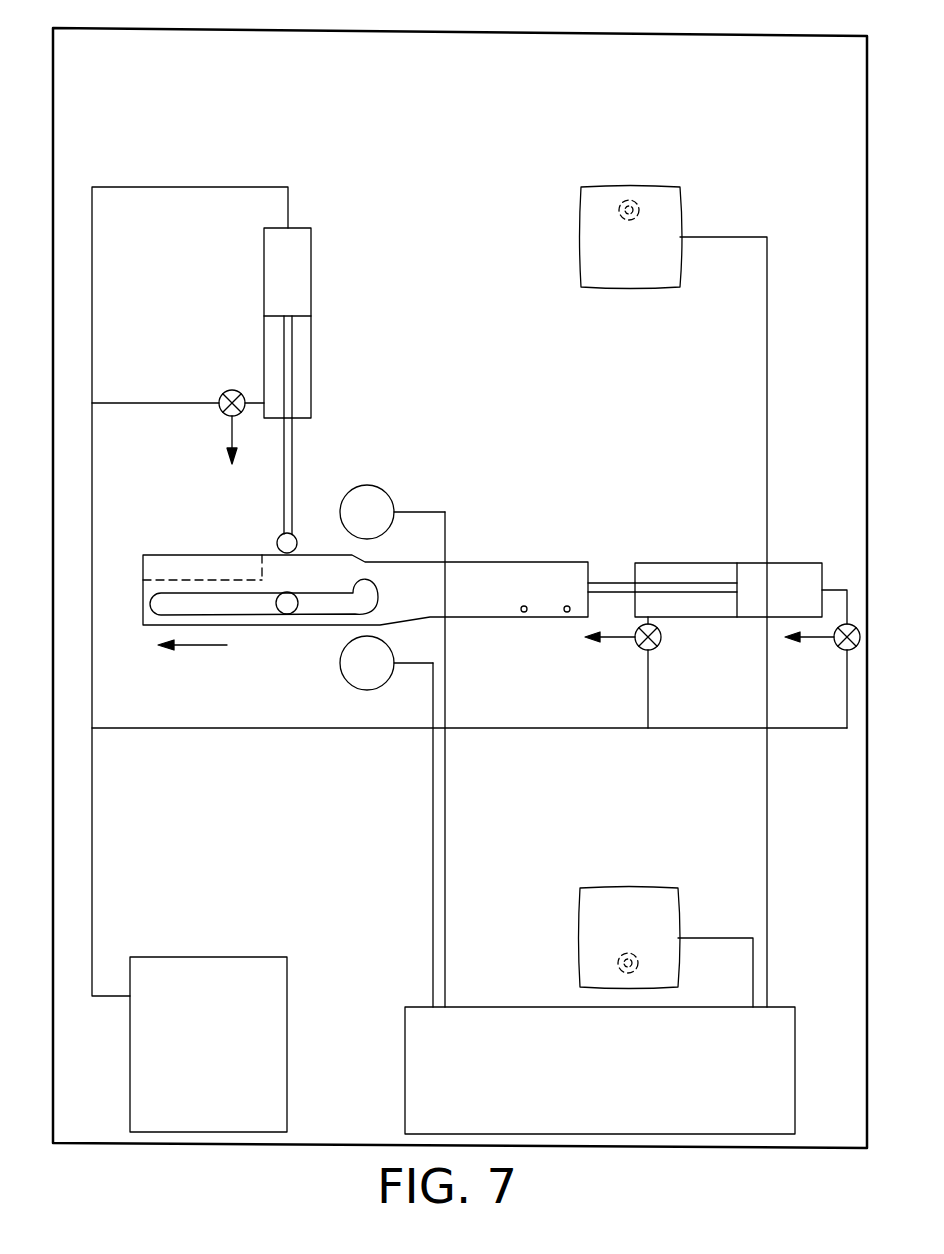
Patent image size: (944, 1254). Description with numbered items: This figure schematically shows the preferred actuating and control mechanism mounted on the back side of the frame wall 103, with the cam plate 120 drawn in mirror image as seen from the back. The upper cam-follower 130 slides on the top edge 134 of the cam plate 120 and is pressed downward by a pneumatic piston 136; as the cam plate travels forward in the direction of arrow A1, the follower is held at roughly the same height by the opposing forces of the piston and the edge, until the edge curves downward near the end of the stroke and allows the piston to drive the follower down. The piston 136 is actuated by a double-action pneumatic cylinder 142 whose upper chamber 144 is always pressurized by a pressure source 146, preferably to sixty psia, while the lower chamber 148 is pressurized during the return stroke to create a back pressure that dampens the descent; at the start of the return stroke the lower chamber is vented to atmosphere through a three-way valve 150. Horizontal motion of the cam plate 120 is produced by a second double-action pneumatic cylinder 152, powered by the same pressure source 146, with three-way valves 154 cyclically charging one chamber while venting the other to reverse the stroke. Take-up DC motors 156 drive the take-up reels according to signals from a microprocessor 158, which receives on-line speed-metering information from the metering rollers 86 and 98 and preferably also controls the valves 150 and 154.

The frame wall 103 is at (533, 48).
The double-action pneumatic cylinder 142 is at (313, 282).
The upper chamber 144 is at (293, 238).
The lower chamber 148 is at (300, 368).
The pneumatic piston 136 is at (290, 480).
The three-way valve 150 is at (250, 397).
The upper cam-follower 130 is at (280, 540).
The metering roller 98 is at (374, 494).
The metering roller 86 is at (357, 664).
The top edge 134 is at (183, 553).
The cam plate 120 is at (148, 590).
The direction of forward travel A1 is at (210, 648).
The double-action pneumatic cylinder 152 is at (755, 573).
The three-way valves 154 is at (840, 648).
The take-up DC motors 156 is at (656, 200).
The pressure source 146 is at (210, 978).
The microprocessor 158 is at (483, 1028).